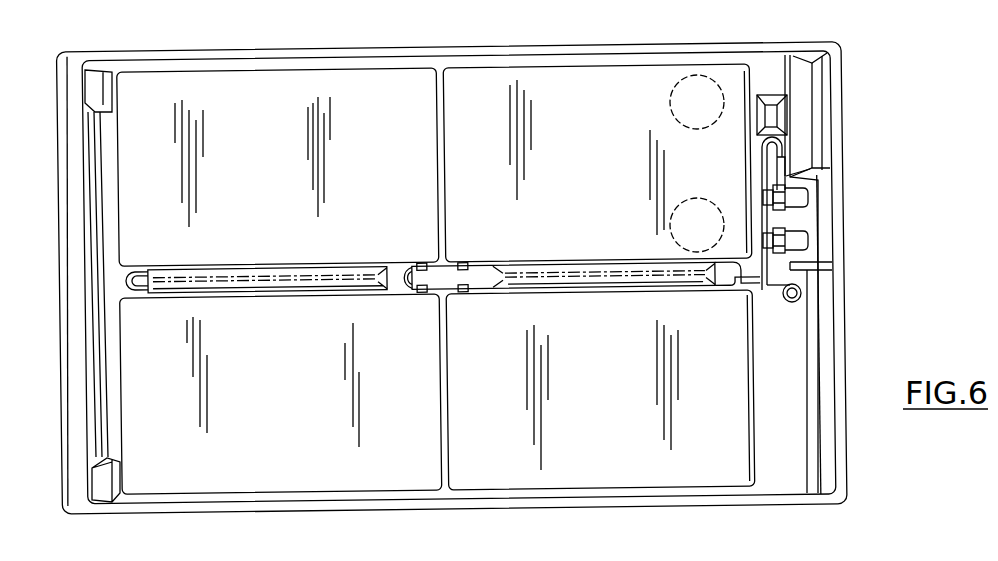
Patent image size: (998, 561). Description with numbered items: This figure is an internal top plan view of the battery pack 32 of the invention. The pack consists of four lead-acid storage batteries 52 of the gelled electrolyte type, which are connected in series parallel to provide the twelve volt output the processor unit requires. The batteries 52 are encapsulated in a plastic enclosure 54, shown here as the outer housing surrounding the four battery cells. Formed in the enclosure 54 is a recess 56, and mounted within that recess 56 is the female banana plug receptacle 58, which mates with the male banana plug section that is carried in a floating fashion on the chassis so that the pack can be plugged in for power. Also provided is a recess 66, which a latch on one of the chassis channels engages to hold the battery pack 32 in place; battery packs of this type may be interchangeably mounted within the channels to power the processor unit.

The battery pack housing 32 is at (862, 268).
The lead-acid storage batteries 52 is at (402, 251).
The plastic enclosure 54 is at (813, 65).
The recess 56 is at (797, 222).
The female banana plug receptacle 58 is at (817, 196).
The recess 66 is at (103, 485).